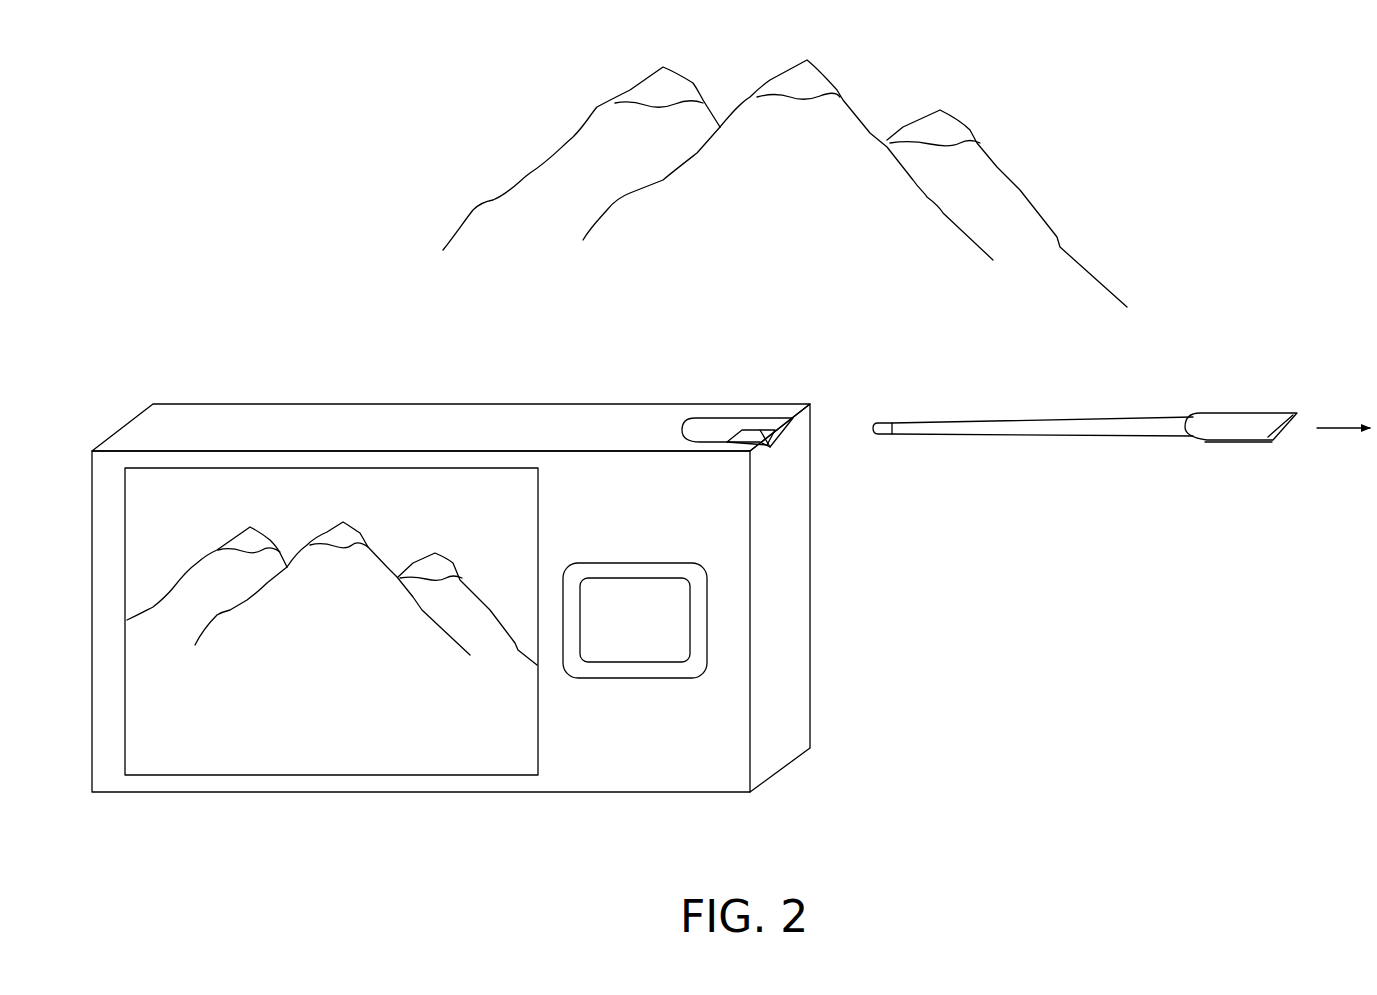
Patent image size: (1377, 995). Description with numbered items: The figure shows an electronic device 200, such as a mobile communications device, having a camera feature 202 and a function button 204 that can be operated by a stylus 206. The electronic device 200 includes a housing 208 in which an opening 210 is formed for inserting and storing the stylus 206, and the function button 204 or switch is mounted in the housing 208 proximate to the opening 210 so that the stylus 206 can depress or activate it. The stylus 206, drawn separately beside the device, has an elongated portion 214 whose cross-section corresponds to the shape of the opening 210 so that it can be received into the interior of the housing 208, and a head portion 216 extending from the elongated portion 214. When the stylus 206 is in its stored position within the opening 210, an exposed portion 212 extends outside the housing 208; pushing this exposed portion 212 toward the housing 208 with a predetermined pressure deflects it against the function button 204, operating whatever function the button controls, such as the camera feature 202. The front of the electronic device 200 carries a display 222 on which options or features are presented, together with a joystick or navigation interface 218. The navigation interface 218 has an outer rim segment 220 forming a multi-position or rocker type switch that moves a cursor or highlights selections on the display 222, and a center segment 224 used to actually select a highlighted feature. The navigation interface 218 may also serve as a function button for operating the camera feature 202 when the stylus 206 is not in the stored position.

The electronic device 200 is at (451, 574).
The camera feature 202 is at (292, 743).
The function button 204 is at (755, 428).
The stylus 206 is at (1121, 424).
The housing 208 is at (495, 403).
The opening 210 is at (685, 430).
The exposed portion 212 is at (1255, 407).
The elongated portion 214 is at (930, 438).
The head portion 216 is at (1255, 443).
The navigation interface 218 is at (632, 652).
The outer rim segment 220 is at (667, 678).
The display 222 is at (537, 517).
The center segment 224 is at (643, 593).